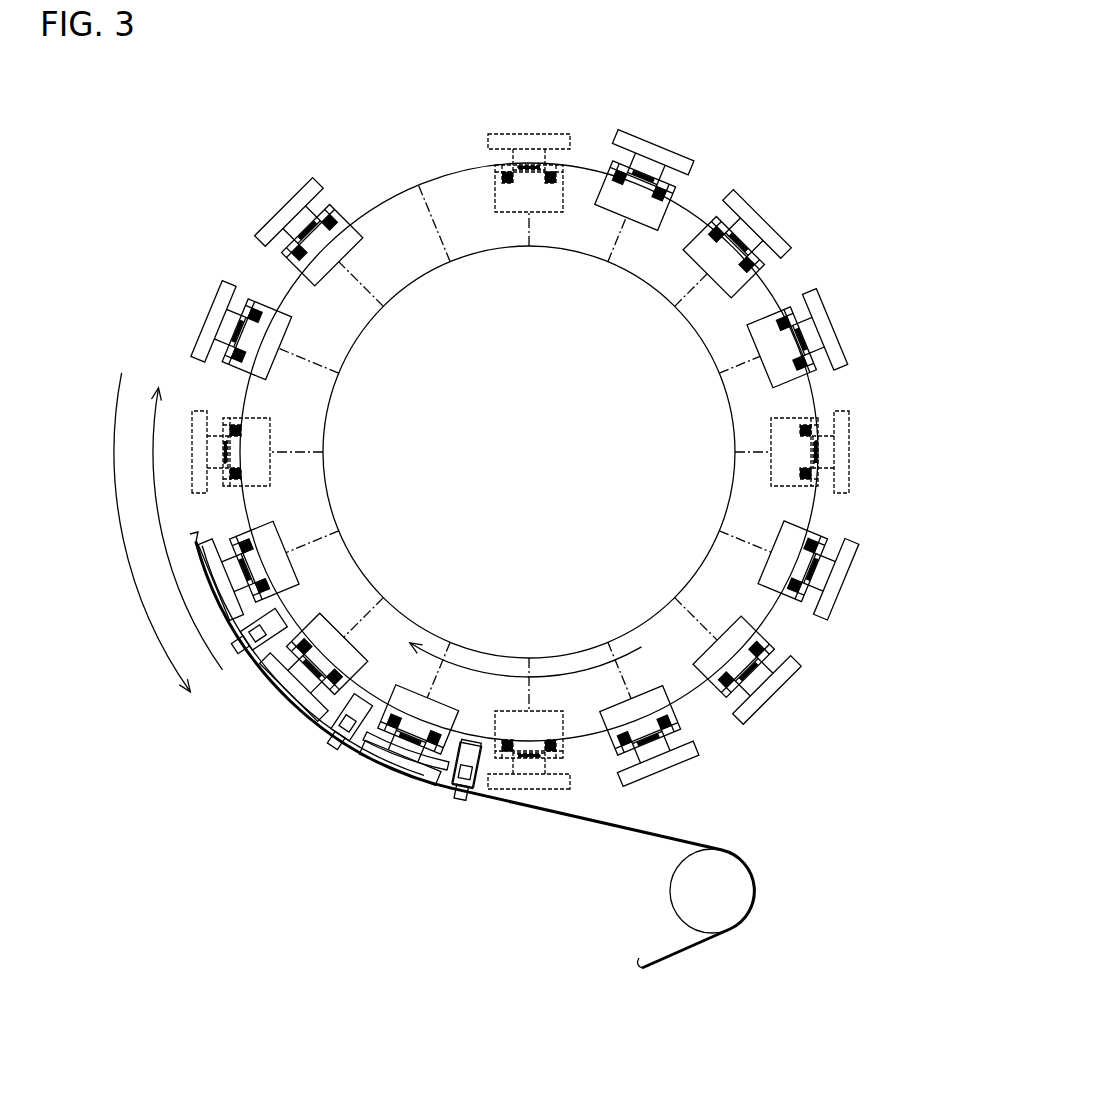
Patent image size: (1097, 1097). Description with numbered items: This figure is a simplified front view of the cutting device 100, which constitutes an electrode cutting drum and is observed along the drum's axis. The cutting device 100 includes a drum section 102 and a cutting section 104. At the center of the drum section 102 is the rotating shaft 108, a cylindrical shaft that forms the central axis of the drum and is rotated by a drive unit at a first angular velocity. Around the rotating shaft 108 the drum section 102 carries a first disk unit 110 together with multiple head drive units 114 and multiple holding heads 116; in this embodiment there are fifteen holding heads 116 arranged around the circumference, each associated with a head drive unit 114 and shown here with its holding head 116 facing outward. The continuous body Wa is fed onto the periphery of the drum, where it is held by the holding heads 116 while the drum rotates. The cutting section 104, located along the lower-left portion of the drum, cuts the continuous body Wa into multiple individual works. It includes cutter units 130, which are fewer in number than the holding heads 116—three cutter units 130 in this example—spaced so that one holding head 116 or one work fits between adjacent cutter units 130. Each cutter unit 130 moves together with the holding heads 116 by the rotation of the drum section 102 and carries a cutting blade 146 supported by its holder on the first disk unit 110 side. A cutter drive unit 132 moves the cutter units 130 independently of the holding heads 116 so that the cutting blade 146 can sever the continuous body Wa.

The cutting device 100 is at (817, 266).
The drum section 102 is at (694, 206).
The cutting section 104 is at (166, 757).
The rotating shaft 108 is at (418, 270).
The first disk unit 110 is at (452, 168).
The head drive unit 114 is at (768, 640).
The holding head 116 is at (766, 692).
The cutter unit 130 is at (250, 656).
The cutter drive unit 132 is at (455, 756).
The cutting blade 146 is at (465, 808).
The continuous body Wa is at (632, 833).